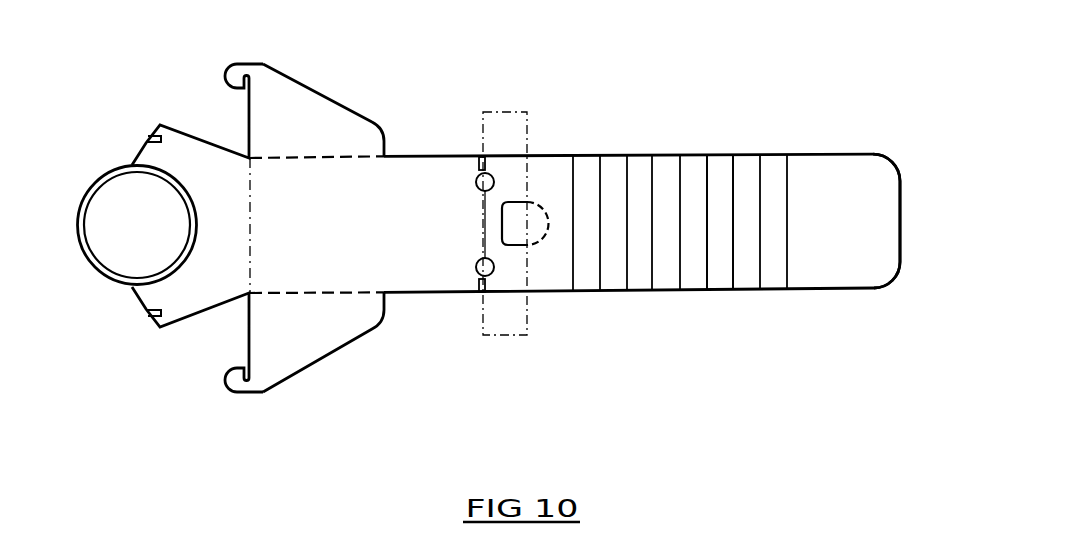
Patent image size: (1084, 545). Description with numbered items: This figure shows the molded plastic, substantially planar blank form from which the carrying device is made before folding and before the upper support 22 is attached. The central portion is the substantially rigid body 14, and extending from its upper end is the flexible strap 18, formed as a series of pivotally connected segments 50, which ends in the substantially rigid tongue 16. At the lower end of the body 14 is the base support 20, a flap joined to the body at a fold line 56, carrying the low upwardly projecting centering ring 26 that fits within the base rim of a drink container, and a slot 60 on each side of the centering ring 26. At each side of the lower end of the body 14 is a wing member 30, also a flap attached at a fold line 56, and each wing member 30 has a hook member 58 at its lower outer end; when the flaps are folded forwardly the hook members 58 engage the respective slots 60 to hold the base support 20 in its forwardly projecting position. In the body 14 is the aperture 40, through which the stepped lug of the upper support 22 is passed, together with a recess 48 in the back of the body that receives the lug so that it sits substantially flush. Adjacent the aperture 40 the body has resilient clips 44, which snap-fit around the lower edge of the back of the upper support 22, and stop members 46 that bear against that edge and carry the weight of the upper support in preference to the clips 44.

The body 14 is at (432, 283).
The tongue 16 is at (852, 275).
The strap 18 is at (677, 155).
The base support 20 is at (202, 168).
The upper support 22 is at (503, 111).
The centering ring 26 is at (108, 279).
The wing member 30 is at (302, 125).
The aperture 40 is at (520, 217).
The resilient clip 44 is at (488, 275).
The stop member 46 is at (482, 292).
The recess 48 is at (543, 237).
The segments 50 is at (722, 280).
The fold lines 56 is at (354, 155).
The hook member 58 is at (233, 68).
The slot 60 is at (155, 140).